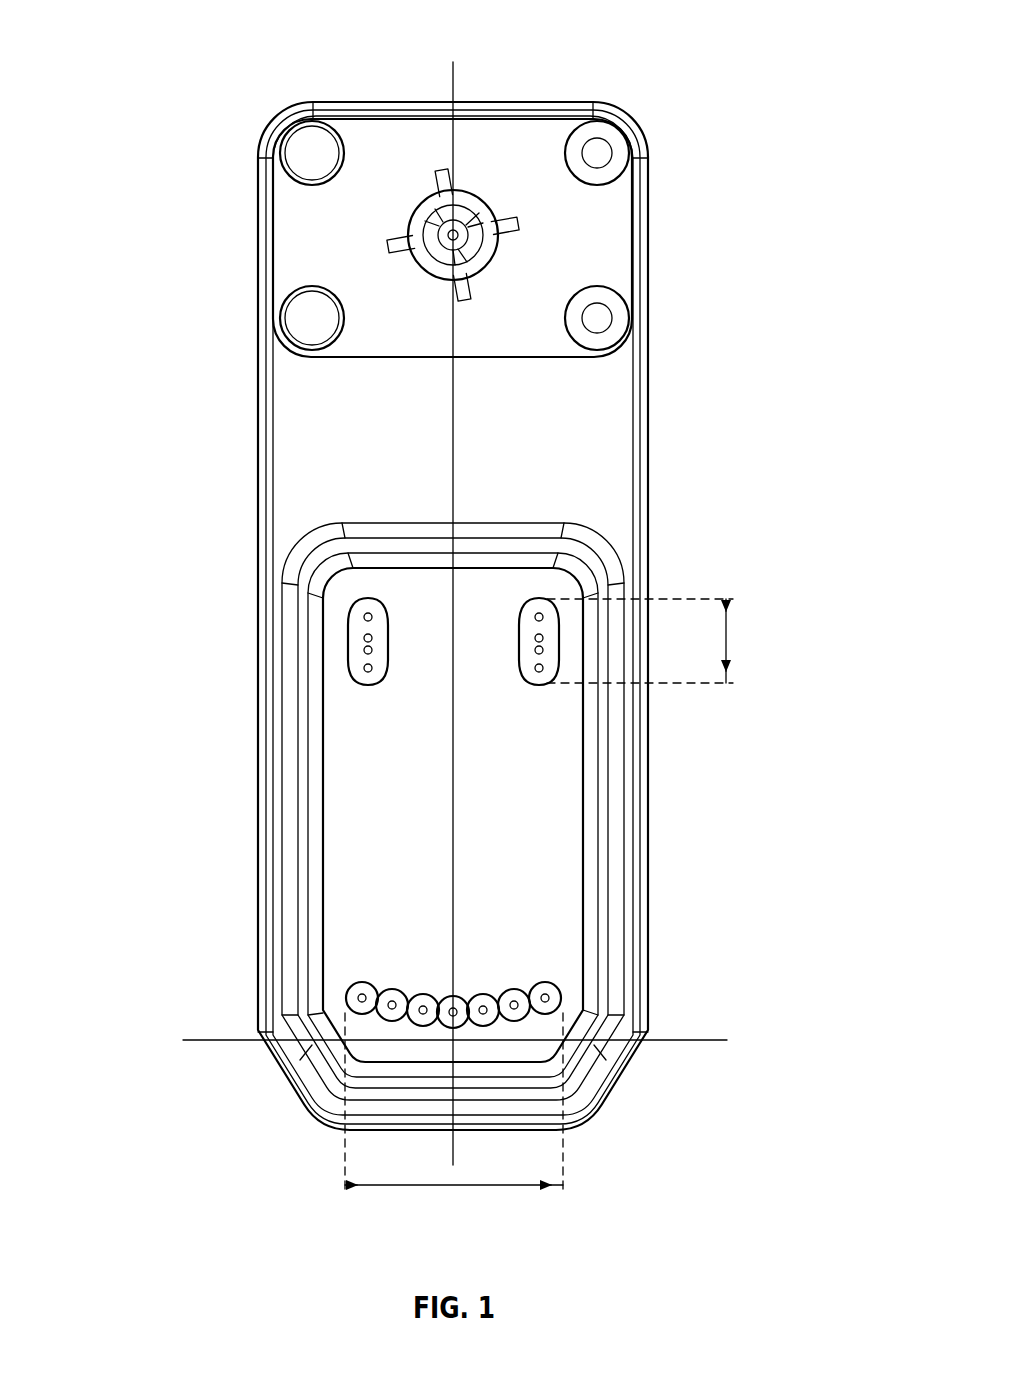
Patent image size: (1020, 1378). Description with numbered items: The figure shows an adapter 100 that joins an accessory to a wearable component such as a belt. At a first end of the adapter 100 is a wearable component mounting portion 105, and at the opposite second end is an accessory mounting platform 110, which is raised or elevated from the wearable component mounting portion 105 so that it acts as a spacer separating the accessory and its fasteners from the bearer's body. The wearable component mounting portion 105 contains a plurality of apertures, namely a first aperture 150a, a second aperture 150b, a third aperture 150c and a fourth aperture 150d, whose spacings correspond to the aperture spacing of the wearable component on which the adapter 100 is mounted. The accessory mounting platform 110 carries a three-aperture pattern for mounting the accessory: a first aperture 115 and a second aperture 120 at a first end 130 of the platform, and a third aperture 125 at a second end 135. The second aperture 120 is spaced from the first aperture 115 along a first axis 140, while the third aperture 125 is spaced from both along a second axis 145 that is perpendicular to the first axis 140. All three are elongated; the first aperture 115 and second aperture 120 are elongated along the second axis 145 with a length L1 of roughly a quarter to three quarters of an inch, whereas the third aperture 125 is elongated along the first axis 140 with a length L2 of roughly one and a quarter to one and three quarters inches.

The adapter 100 is at (158, 32).
The wearable component mounting portion 105 is at (502, 155).
The accessory mounting platform 110 is at (543, 890).
The first aperture 115 is at (357, 625).
The second aperture 120 is at (547, 633).
The third aperture 125 is at (575, 993).
The first end 130 is at (313, 560).
The second end 135 is at (527, 1097).
The first axis 140 is at (663, 1040).
The second axis 145 is at (452, 85).
The first aperture 150a is at (305, 150).
The second aperture 150b is at (305, 320).
The third aperture 150c is at (597, 152).
The fourth aperture 150d is at (597, 325).
The length L1 is at (727, 640).
The length L2 is at (478, 1187).